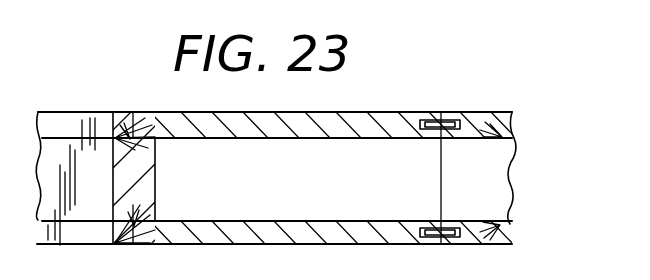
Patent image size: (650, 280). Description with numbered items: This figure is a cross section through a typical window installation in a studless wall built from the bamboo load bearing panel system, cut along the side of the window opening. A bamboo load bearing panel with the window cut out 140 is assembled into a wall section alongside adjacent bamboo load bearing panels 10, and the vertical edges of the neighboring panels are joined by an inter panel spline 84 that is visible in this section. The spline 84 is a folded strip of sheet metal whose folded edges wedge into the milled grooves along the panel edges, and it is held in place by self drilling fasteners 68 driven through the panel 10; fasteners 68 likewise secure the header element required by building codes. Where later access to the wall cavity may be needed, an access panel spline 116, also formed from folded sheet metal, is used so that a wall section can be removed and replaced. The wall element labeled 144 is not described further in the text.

The bamboo load bearing panel 10 is at (478, 111).
The self drilling fastener 68 is at (135, 117).
The inter panel spline 84 is at (428, 120).
The access panel spline 116 is at (145, 156).
The window cut out 140 is at (69, 119).
The wall 144 is at (350, 112).